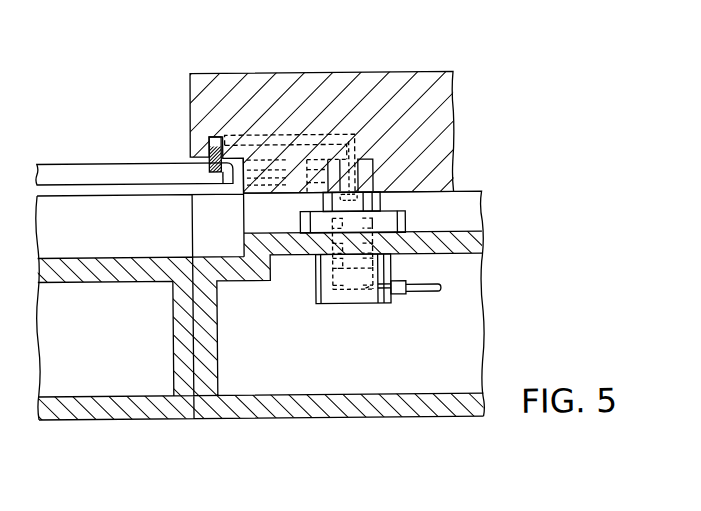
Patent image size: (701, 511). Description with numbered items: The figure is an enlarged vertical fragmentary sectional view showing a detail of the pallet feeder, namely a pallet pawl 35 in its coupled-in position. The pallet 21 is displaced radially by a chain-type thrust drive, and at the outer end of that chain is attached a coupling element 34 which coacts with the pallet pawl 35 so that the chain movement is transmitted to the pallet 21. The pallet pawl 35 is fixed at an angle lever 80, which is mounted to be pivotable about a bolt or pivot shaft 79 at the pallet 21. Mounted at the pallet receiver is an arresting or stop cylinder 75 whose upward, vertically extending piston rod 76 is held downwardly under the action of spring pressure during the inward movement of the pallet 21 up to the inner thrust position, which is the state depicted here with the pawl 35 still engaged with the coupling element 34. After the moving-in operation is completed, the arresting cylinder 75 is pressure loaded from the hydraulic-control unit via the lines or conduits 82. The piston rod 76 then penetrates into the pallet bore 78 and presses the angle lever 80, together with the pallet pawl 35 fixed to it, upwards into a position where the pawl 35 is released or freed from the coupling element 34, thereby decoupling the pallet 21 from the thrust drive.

The pallet 21 is at (328, 86).
The coupling element 34 is at (83, 173).
The pallet pawl 35 is at (215, 177).
The arresting cylinder 75 is at (327, 299).
The piston rod 76 is at (356, 208).
The pallet bore 78 is at (358, 181).
The pivot shaft 79 is at (276, 172).
The angle lever 80 is at (265, 155).
The lines 82 is at (418, 293).